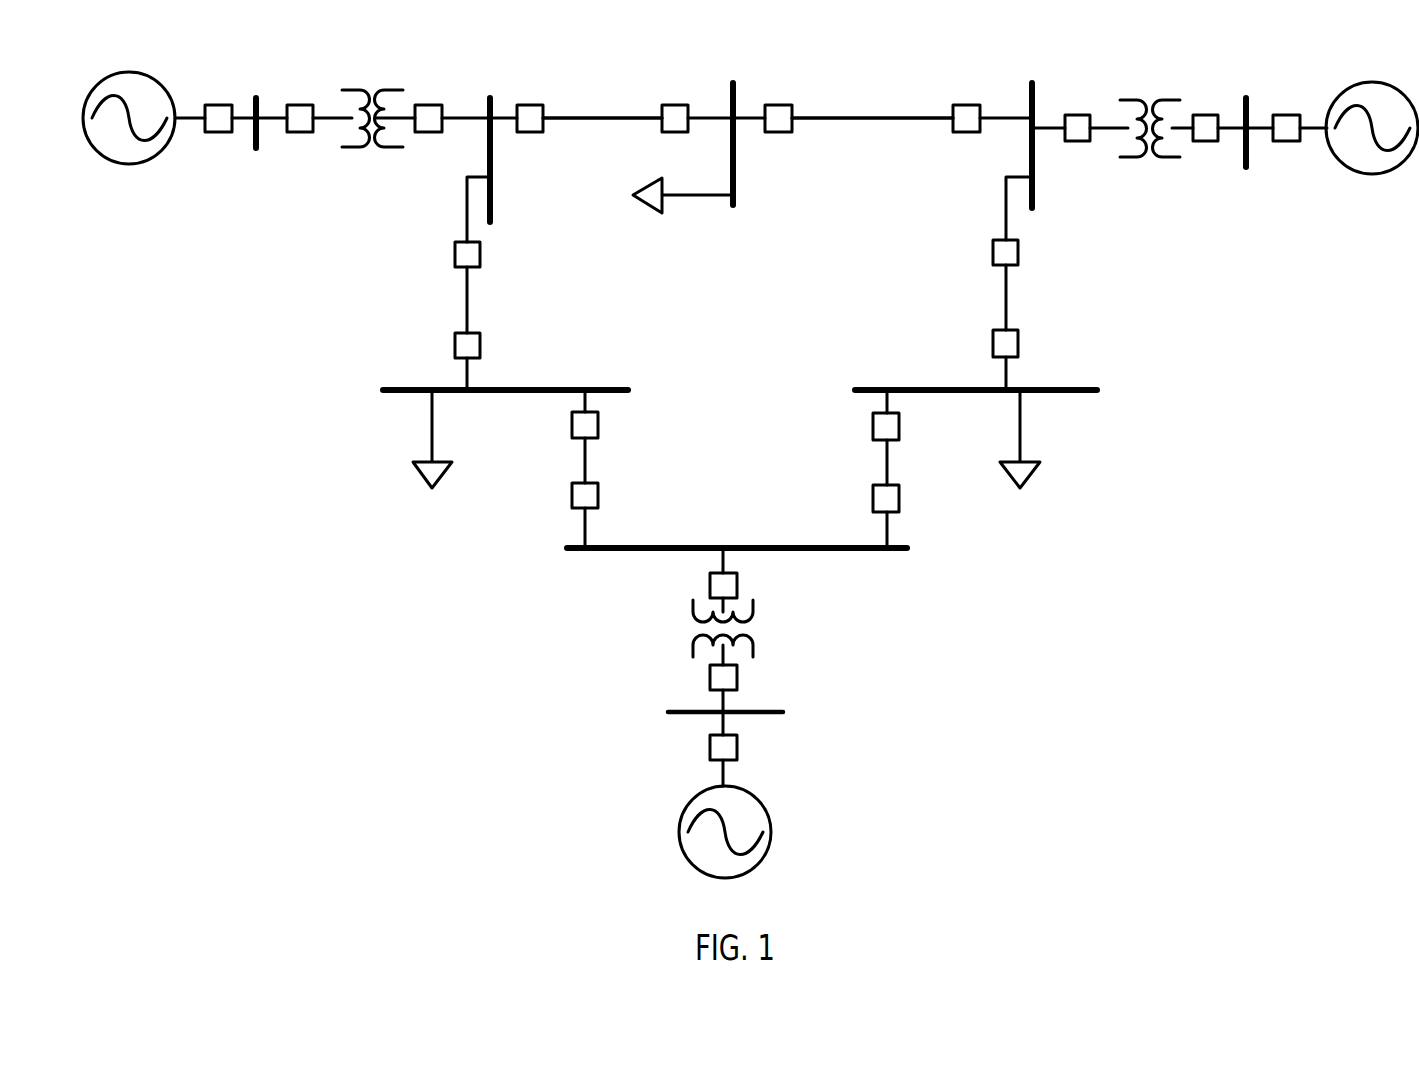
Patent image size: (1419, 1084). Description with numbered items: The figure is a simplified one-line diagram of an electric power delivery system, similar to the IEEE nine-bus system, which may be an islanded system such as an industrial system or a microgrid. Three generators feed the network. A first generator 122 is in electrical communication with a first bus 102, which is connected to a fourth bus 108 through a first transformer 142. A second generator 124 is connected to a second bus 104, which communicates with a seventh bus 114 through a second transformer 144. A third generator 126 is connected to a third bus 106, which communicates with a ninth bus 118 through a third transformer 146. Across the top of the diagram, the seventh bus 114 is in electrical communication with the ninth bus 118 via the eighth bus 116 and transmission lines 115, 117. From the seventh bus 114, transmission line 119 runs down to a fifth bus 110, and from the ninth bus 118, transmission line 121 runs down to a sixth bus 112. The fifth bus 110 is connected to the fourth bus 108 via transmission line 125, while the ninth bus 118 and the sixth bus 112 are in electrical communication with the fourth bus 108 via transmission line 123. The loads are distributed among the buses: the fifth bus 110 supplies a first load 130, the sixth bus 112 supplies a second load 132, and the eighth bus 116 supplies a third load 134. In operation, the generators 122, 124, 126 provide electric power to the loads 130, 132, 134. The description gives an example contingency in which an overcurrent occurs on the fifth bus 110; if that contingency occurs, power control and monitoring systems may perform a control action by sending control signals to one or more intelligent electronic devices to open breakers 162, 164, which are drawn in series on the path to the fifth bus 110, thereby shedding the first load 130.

The first bus 102 is at (770, 714).
The second bus 104 is at (256, 98).
The third bus 106 is at (1248, 98).
The fourth bus 108 is at (842, 551).
The fifth bus 110 is at (398, 393).
The sixth bus 112 is at (1072, 393).
The seventh bus 114 is at (492, 99).
The transmission line 115 is at (591, 117).
The eighth bus 116 is at (735, 84).
The transmission line 117 is at (862, 117).
The ninth bus 118 is at (1034, 84).
The transmission line 119 is at (466, 290).
The transmission line 121 is at (1007, 288).
The first generator 122 is at (680, 830).
The transmission line 123 is at (886, 460).
The second generator 124 is at (128, 165).
The transmission line 125 is at (586, 460).
The third generator 126 is at (1365, 172).
The first load 130 is at (416, 470).
The second load 132 is at (1038, 470).
The third load 134 is at (660, 213).
The first transformer 142 is at (755, 612).
The second transformer 144 is at (388, 90).
The third transformer 146 is at (1140, 100).
The breaker 162 is at (481, 348).
The breaker 164 is at (599, 430).